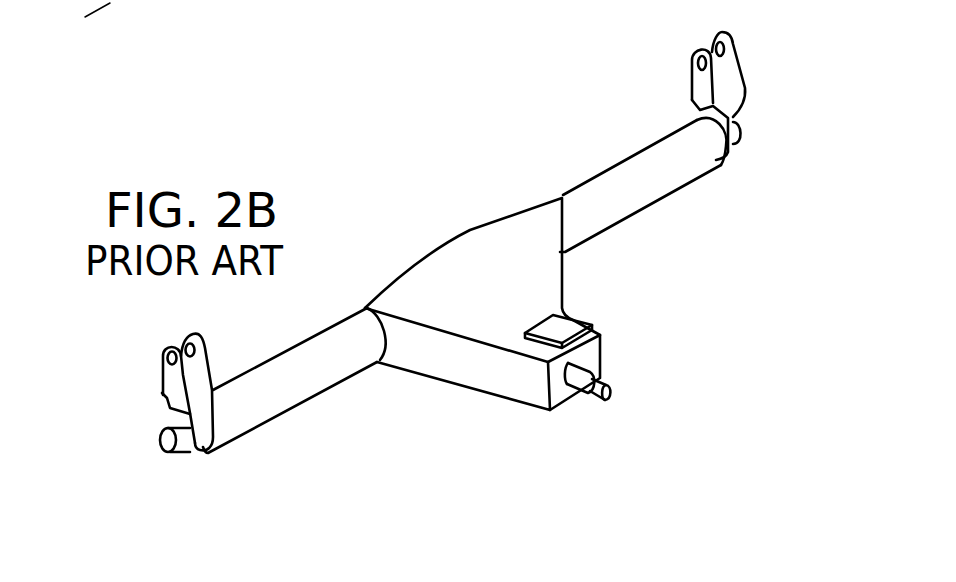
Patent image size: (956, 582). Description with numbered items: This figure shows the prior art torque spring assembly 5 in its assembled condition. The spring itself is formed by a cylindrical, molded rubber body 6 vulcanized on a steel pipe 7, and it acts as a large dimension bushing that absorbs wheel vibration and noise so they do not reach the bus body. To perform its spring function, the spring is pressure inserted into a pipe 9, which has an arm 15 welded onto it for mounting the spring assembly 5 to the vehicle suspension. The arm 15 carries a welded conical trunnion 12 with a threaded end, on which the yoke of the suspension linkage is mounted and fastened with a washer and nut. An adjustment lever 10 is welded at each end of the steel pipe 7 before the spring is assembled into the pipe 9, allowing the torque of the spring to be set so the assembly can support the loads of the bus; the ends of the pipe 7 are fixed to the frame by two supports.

The torque spring assembly 5 is at (623, 270).
The rubber body 6 is at (272, 13).
The steel pipe 7 is at (175, 457).
The pipe 9 is at (278, 403).
The adjustment lever 10 is at (158, 388).
The conical trunnion 12 is at (593, 402).
The arm 15 is at (465, 312).